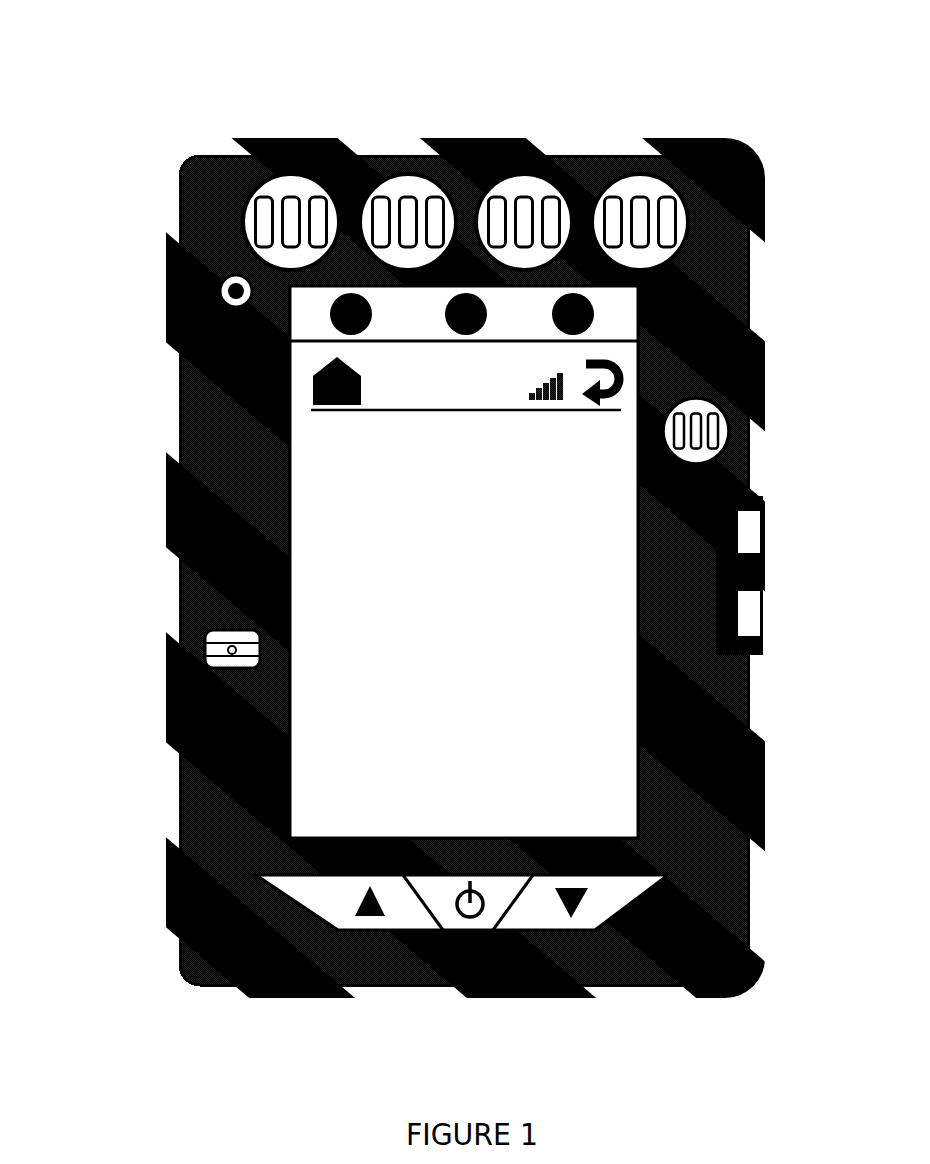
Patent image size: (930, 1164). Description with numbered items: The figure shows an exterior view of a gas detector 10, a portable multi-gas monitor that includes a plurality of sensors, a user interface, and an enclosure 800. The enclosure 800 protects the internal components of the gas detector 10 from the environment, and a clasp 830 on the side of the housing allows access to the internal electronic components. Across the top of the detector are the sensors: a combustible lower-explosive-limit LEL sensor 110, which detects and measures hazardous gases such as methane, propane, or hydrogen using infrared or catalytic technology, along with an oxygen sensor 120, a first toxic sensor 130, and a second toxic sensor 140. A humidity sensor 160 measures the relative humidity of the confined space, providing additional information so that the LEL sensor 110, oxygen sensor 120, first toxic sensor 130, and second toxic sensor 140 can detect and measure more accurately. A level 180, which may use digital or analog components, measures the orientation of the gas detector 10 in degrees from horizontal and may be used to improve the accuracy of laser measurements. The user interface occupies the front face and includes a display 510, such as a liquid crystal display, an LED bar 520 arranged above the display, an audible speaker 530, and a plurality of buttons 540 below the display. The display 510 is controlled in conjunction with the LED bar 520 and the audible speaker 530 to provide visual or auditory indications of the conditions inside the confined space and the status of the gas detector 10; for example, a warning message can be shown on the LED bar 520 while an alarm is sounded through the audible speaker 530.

The gas detector 10 is at (98, 81).
The LEL sensor 110 is at (616, 151).
The oxygen sensor 120 is at (231, 167).
The first toxic sensor 130 is at (378, 147).
The second toxic sensor 140 is at (460, 177).
The humidity sensor 160 is at (741, 451).
The level 180 is at (190, 609).
The display 510 is at (379, 817).
The LED bar 520 is at (455, 347).
The audible speaker 530 is at (203, 259).
The buttons 540 is at (588, 940).
The enclosure 800 is at (688, 989).
The clasp 830 is at (775, 565).